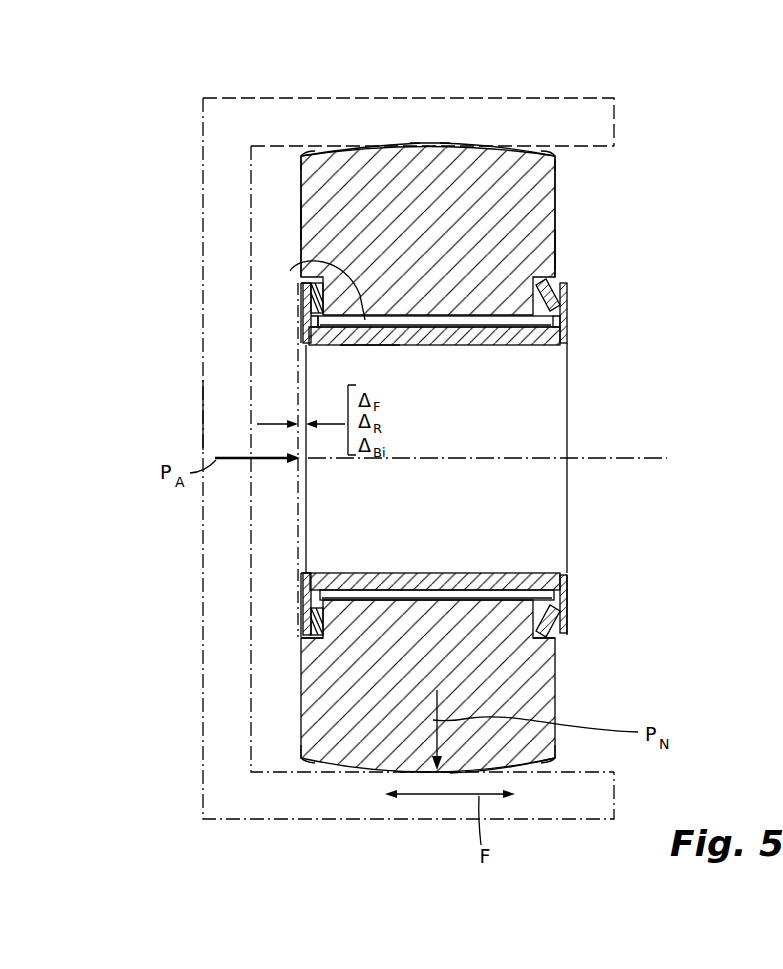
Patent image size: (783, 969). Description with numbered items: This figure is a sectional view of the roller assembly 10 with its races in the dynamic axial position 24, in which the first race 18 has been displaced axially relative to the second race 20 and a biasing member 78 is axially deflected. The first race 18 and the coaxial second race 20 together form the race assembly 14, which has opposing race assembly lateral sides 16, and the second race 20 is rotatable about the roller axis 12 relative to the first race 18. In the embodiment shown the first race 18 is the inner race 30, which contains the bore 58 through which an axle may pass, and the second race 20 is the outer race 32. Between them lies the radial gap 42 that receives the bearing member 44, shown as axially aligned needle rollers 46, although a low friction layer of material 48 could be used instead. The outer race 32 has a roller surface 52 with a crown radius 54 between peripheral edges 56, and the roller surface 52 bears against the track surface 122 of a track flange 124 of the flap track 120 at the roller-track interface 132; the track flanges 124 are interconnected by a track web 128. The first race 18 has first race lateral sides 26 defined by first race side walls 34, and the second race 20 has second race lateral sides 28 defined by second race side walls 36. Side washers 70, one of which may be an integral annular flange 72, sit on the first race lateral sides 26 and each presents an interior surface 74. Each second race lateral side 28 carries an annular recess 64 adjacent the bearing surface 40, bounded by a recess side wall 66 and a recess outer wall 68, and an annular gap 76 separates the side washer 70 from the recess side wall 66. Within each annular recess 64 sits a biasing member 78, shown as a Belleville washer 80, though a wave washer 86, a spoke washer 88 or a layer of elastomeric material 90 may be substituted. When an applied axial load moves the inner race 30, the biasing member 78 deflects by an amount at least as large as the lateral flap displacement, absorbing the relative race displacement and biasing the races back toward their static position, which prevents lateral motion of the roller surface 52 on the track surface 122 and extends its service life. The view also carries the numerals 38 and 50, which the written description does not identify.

The roller assembly 10 is at (533, 222).
The roller axis 12 is at (667, 459).
The race assembly 14 is at (533, 222).
The race assembly lateral sides 16 is at (305, 213).
The first race 18 is at (507, 356).
The second race 20 is at (498, 231).
The dynamic axial position 24 is at (628, 166).
The first race lateral sides 26 is at (403, 350).
The second race lateral sides 28 is at (401, 218).
The inner race 30 is at (512, 322).
The outer race 32 is at (556, 188).
The first race side walls 34 is at (403, 350).
The second race side walls 36 is at (301, 250).
The raceway 38 is at (383, 340).
The bearing surface 40 is at (316, 266).
The radial gap 42 is at (403, 350).
The bearing member 44 is at (310, 343).
The needle rollers 46 is at (508, 587).
The low friction layer of material 48 is at (527, 595).
The inner ring 50 is at (345, 573).
The roller surface 52 is at (362, 148).
The crown radius 54 is at (518, 150).
The peripheral edges 56 is at (298, 150).
The bore 58 is at (568, 505).
The annular recess 64 is at (305, 643).
The recess side wall 66 is at (305, 613).
The recess outer wall 68 is at (305, 672).
The side washers 70 is at (403, 322).
The annular flange 72 is at (312, 318).
The interior surface 74 is at (305, 612).
The annular gap 76 is at (305, 284).
The biasing member 78 is at (400, 472).
The Belleville washer 80 is at (400, 472).
The wave washer 86 is at (400, 472).
The spoke washer 88 is at (400, 472).
The elastomeric material 90 is at (560, 302).
The flap track 120 is at (413, 97).
The track surface 122 is at (400, 460).
The track flanges 124 is at (282, 147).
The track web 128 is at (213, 415).
The roller-track interface 132 is at (447, 148).